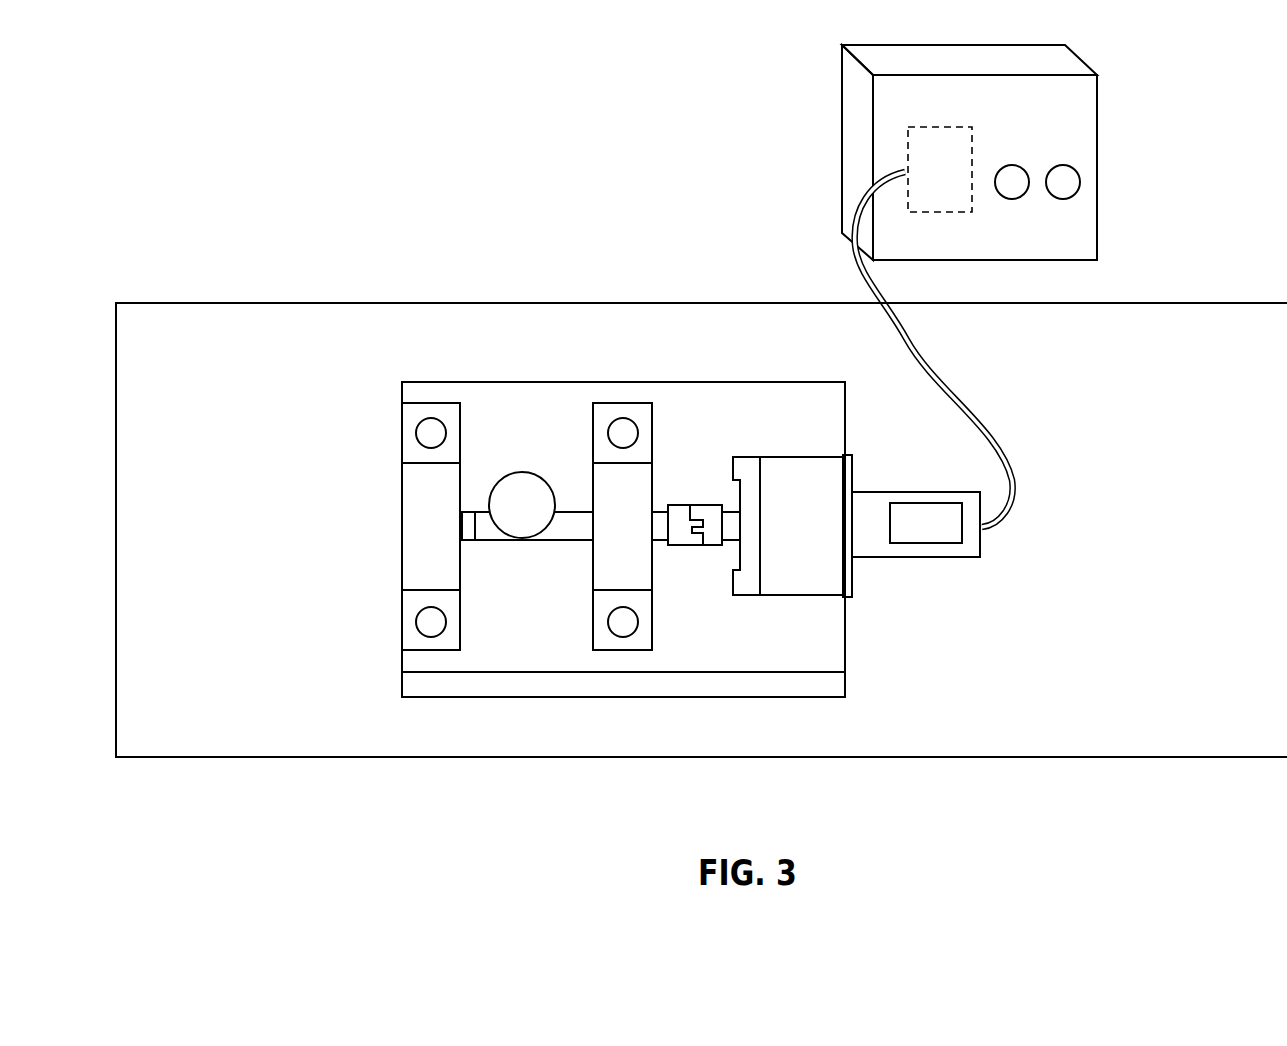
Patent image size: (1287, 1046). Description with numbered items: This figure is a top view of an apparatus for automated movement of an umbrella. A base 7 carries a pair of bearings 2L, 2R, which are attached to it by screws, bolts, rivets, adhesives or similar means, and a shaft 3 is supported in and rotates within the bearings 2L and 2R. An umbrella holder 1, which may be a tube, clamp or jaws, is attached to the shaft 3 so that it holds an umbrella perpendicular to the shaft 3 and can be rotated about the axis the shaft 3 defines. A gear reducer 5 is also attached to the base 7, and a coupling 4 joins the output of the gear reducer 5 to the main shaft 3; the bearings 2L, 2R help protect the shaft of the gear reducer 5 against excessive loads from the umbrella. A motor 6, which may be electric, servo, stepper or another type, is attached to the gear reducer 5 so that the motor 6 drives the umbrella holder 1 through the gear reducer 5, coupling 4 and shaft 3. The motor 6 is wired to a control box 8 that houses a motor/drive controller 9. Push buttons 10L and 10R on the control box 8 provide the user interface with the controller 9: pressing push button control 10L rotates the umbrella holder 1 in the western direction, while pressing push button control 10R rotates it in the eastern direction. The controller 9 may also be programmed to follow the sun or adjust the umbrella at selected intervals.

The umbrella holder 1 is at (522, 475).
The left bearing 2L is at (410, 622).
The right bearing 2R is at (625, 640).
The shaft 3 is at (558, 527).
The coupling 4 is at (693, 507).
The gear reducer 5 is at (802, 463).
The motor 6 is at (875, 505).
The base 7 is at (847, 682).
The control box 8 is at (1097, 102).
The motor/drive controller 9 is at (925, 157).
The push button control 10L is at (1015, 173).
The push button control 10R is at (1067, 182).